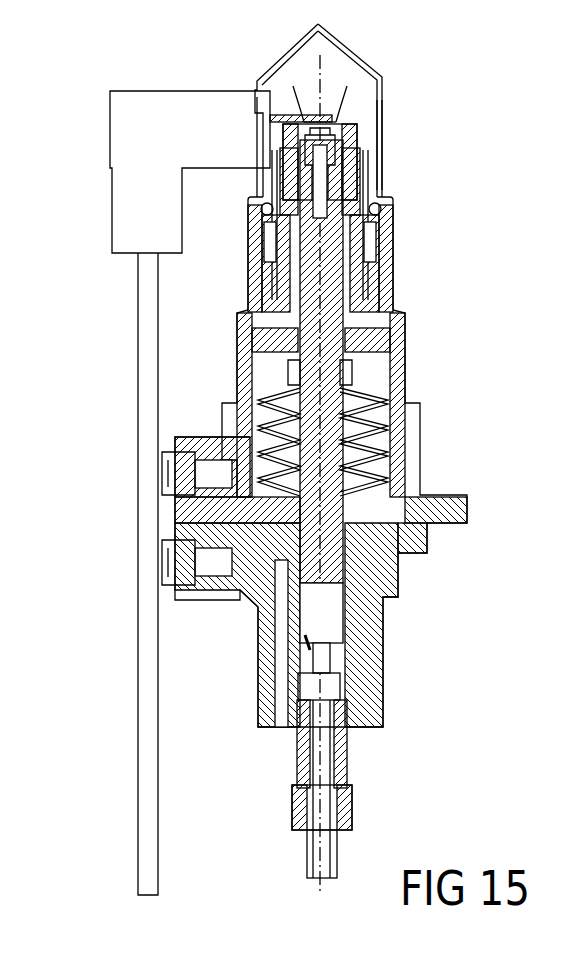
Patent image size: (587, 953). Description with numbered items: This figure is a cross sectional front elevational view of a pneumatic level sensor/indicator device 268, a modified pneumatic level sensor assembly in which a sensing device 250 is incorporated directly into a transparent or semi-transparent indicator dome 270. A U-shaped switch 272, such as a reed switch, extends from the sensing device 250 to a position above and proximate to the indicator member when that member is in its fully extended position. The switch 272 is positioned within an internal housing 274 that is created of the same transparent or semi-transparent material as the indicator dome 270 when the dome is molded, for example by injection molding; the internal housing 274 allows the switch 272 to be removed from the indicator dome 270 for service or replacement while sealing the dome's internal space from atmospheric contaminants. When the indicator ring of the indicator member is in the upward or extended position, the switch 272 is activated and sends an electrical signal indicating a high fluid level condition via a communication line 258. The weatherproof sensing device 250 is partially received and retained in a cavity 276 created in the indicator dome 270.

The sensing device 250 is at (138, 110).
The communication line 258 is at (142, 305).
The pneumatic level sensor/indicator device 268 is at (439, 297).
The indicator dome 270 is at (380, 150).
The U-shaped switch 272 is at (300, 118).
The internal housing 274 is at (333, 125).
The cavity 276 is at (255, 88).